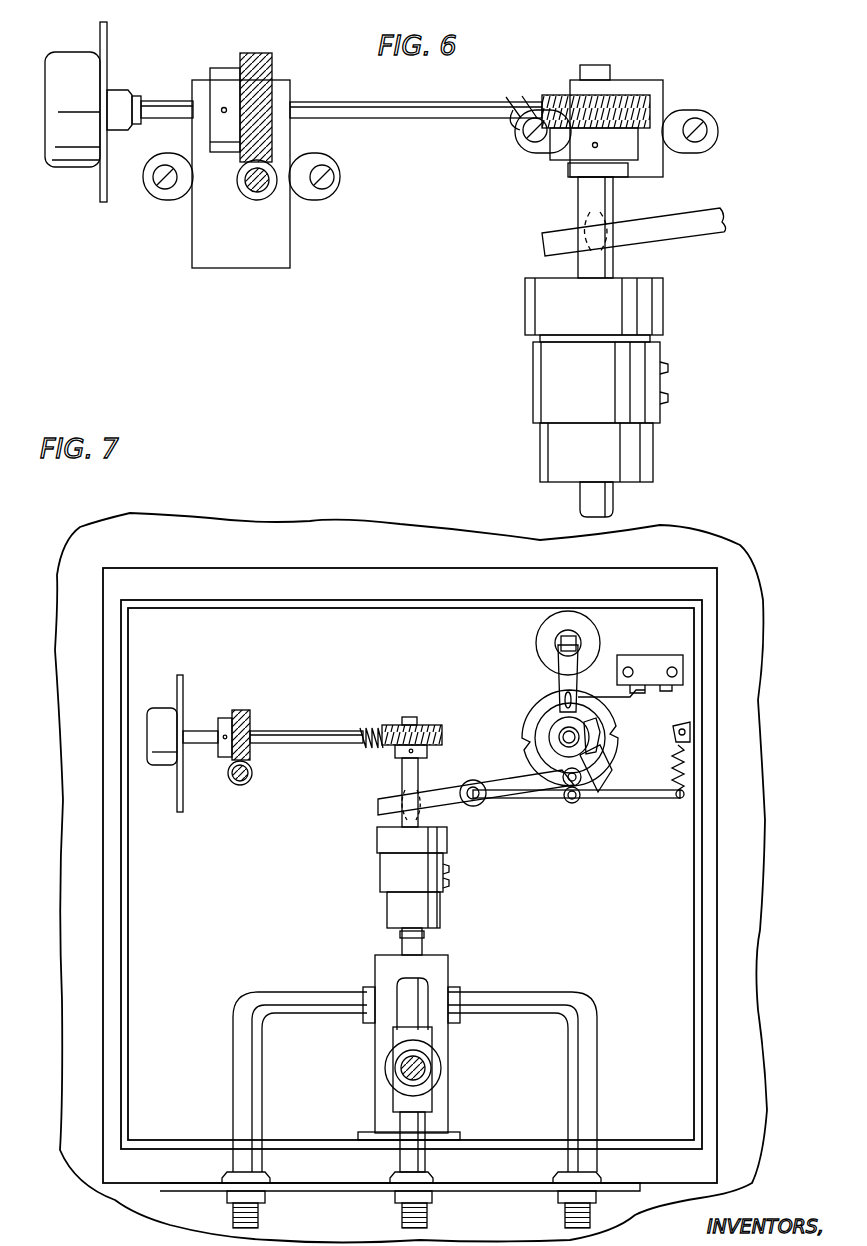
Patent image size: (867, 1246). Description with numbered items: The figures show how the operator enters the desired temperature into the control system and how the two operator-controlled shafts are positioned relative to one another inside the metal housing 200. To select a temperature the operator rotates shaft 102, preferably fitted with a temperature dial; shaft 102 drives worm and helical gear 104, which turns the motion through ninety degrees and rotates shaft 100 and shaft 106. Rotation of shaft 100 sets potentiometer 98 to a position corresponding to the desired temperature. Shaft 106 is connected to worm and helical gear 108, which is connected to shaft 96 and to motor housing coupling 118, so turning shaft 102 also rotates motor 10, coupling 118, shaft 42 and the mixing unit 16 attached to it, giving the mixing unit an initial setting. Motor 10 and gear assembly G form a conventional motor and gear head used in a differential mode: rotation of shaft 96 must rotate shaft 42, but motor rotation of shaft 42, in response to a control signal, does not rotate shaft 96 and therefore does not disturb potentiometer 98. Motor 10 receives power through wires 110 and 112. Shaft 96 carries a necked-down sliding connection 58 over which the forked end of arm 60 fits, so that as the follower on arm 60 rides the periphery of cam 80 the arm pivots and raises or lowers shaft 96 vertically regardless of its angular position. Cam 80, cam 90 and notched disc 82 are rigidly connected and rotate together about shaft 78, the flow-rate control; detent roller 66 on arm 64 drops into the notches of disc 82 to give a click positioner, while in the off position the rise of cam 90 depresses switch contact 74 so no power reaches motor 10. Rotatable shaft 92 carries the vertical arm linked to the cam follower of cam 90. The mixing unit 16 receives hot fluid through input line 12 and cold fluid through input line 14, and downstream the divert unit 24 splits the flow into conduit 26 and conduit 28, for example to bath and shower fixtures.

In FIG. 6, the potentiometer 98 is at (72, 62).
In FIG. 7, the potentiometer 98 is at (163, 768).
In FIG. 6, the shaft 100 is at (162, 100).
In FIG. 7, the shaft 100 is at (208, 745).
In FIG. 6, the shaft 102 is at (272, 195).
In FIG. 7, the shaft 102 is at (250, 778).
In FIG. 6, the worm and helical gear 104 is at (265, 44).
In FIG. 7, the worm and helical gear 104 is at (293, 704).
In FIG. 6, the shaft 106 is at (412, 119).
In FIG. 7, the shaft 106 is at (322, 745).
In FIG. 6, the worm and helical gear 108 is at (730, 100).
In FIG. 7, the worm and helical gear 108 is at (482, 729).
In FIG. 6, the shaft 96 is at (578, 200).
In FIG. 7, the shaft 96 is at (402, 786).
In FIG. 6, the sliding connection 58 is at (618, 228).
In FIG. 7, the sliding connection 58 is at (424, 800).
In FIG. 6, the arm 60 is at (678, 234).
In FIG. 7, the arm 60 is at (530, 790).
In FIG. 6, the motor housing coupling 118 is at (535, 303).
In FIG. 7, the motor housing coupling 118 is at (385, 843).
In FIG. 6, the motor 10 is at (600, 391).
In FIG. 7, the motor 10 is at (420, 880).
In FIG. 6, the wire 110 is at (670, 368).
In FIG. 7, the wire 110 is at (451, 868).
In FIG. 6, the wire 112 is at (670, 398).
In FIG. 7, the wire 112 is at (451, 882).
In FIG. 6, the gear assembly G is at (553, 457).
In FIG. 7, the gear assembly G is at (392, 916).
In FIG. 6, the shaft 42 is at (606, 500).
In FIG. 7, the shaft 42 is at (425, 948).
In FIG. 7, the metal housing 200 is at (697, 892).
In FIG. 7, the rotatable shaft 92 is at (578, 645).
In FIG. 7, the disc 82 is at (525, 716).
In FIG. 7, the shaft 78 is at (558, 740).
In FIG. 7, the cam 90 is at (597, 740).
In FIG. 7, the cam 80 is at (602, 770).
In FIG. 7, the switch contact 74 is at (632, 702).
In FIG. 7, the arm 64 is at (643, 800).
In FIG. 7, the detent roller 66 is at (577, 802).
In FIG. 7, the input line 12 is at (298, 1000).
In FIG. 7, the input line 14 is at (557, 1000).
In FIG. 7, the mixing unit 16 is at (380, 1040).
In FIG. 7, the conduit 28 is at (430, 990).
In FIG. 7, the divert unit 24 is at (432, 1103).
In FIG. 7, the conduit 26 is at (420, 1160).